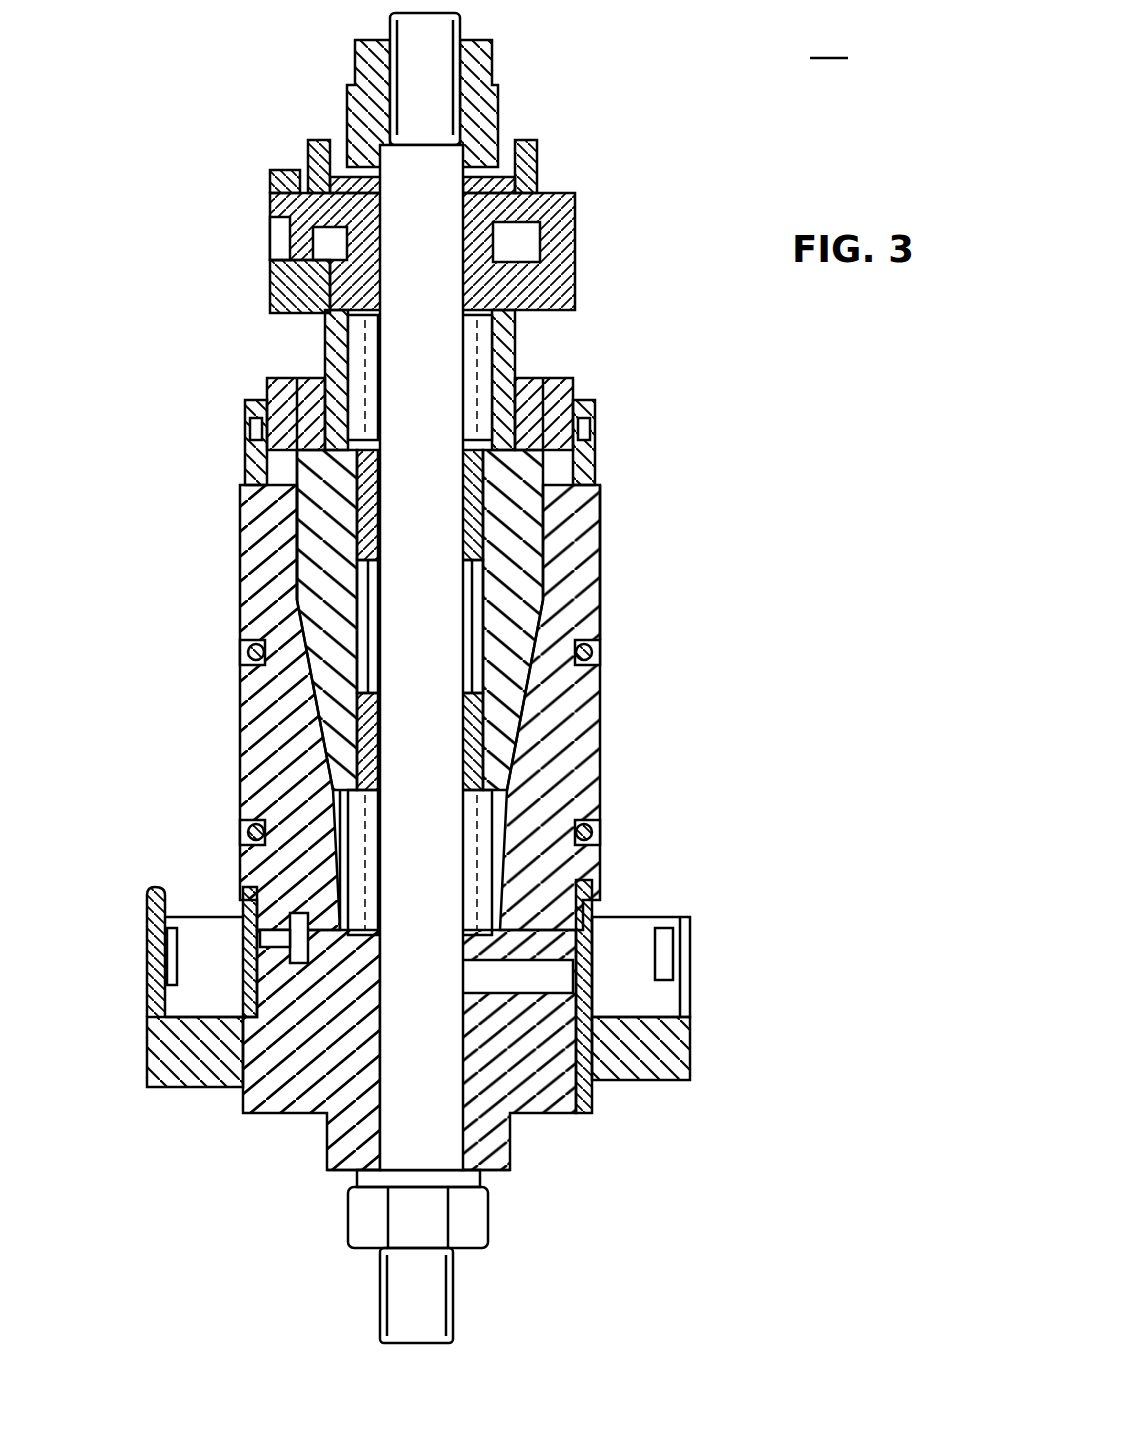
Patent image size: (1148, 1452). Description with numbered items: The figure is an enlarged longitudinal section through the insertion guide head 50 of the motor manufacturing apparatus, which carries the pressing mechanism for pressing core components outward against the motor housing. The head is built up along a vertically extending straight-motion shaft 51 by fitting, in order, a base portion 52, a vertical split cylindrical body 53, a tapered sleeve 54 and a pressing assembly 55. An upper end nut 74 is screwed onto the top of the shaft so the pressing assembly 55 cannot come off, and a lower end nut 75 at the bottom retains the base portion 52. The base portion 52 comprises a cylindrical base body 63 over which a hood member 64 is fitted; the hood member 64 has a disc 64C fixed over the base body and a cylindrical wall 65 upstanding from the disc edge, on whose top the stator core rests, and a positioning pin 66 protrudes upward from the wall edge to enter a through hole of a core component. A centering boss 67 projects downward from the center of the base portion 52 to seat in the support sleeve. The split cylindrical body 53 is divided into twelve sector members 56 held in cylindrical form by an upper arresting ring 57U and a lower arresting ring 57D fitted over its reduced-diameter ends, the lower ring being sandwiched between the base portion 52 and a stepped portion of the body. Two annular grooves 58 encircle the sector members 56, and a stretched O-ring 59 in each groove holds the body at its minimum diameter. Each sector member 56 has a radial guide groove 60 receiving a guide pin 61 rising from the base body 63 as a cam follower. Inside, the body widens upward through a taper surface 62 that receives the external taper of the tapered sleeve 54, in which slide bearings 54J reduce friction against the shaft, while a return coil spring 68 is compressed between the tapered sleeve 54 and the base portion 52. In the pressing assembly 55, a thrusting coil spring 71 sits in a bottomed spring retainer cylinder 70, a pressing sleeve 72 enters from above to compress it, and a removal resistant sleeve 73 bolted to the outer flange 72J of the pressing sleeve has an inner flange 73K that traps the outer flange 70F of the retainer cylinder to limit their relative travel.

The insertion guide head 50 is at (818, 112).
The straight-motion shaft 51 is at (410, 1300).
The base portion 52 is at (600, 1160).
The vertical split cylindrical body 53 is at (605, 590).
The tapered sleeve 54 is at (290, 535).
The slide bearings 54J is at (300, 488).
The pressing assembly 55 is at (578, 185).
The sector members 56 is at (262, 700).
The upper arresting ring 57U is at (590, 450).
The lower arresting ring 57D is at (592, 908).
The annular grooves 58 is at (590, 632).
The O-ring 59 is at (594, 652).
The guide groove 60 is at (300, 920).
The guide pins 61 is at (290, 935).
The taper surface 62 is at (312, 615).
The cylindrical base body 63 is at (590, 1118).
The hood member 64 is at (620, 1085).
The disc 64C is at (685, 1050).
The cylindrical wall 65 is at (690, 1000).
The positioning pin 66 is at (162, 897).
The centering boss 67 is at (510, 1172).
The return coil spring 68 is at (340, 800).
The spring retainer cylinder 70 is at (520, 382).
The outer flange 70F is at (300, 258).
The thrusting coil spring 71 is at (500, 340).
The pressing sleeve 72 is at (480, 240).
The outer flange 72J is at (300, 186).
The removal resistant sleeve 73 is at (540, 290).
The inner flange 73K is at (290, 310).
The upper end nut 74 is at (485, 100).
The lower end nut 75 is at (360, 1215).